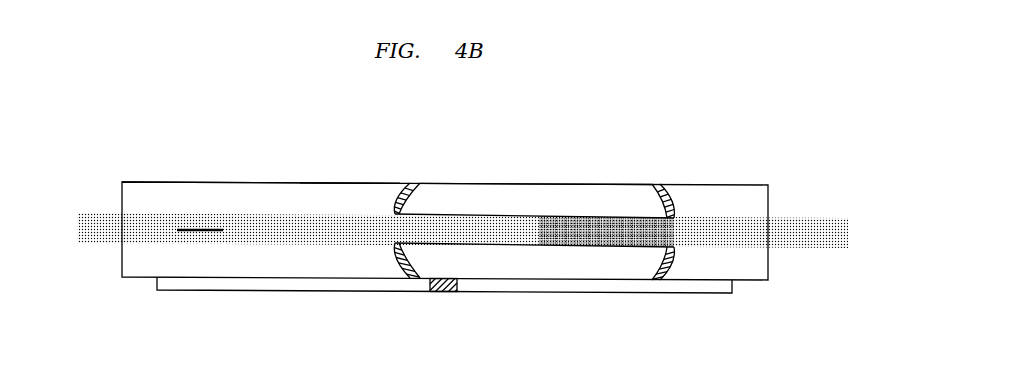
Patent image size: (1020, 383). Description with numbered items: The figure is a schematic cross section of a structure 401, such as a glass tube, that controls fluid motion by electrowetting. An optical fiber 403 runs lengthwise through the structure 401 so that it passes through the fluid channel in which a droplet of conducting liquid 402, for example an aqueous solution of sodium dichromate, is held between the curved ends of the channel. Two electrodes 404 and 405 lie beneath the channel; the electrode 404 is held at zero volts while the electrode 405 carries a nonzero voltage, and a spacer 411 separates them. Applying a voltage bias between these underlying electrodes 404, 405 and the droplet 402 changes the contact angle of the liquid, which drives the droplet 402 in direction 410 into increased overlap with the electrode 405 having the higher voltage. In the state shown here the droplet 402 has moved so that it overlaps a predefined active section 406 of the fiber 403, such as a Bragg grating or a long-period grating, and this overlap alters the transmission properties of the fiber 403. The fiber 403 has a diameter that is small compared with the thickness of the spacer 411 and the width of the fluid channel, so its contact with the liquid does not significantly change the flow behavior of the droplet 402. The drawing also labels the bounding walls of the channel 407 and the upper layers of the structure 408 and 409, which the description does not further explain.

The structure 401 is at (697, 133).
The droplet of conducting liquid 402 is at (512, 187).
The optical fiber 403 is at (92, 242).
The electrode 404 is at (248, 288).
The electrode 405 is at (665, 290).
The active section 406 is at (575, 218).
The cavity wall / seal 407 is at (663, 187).
The top cover plate 408 is at (188, 180).
The cladding layer 409 is at (330, 187).
The direction 410 is at (197, 237).
The spacer 411 is at (450, 293).